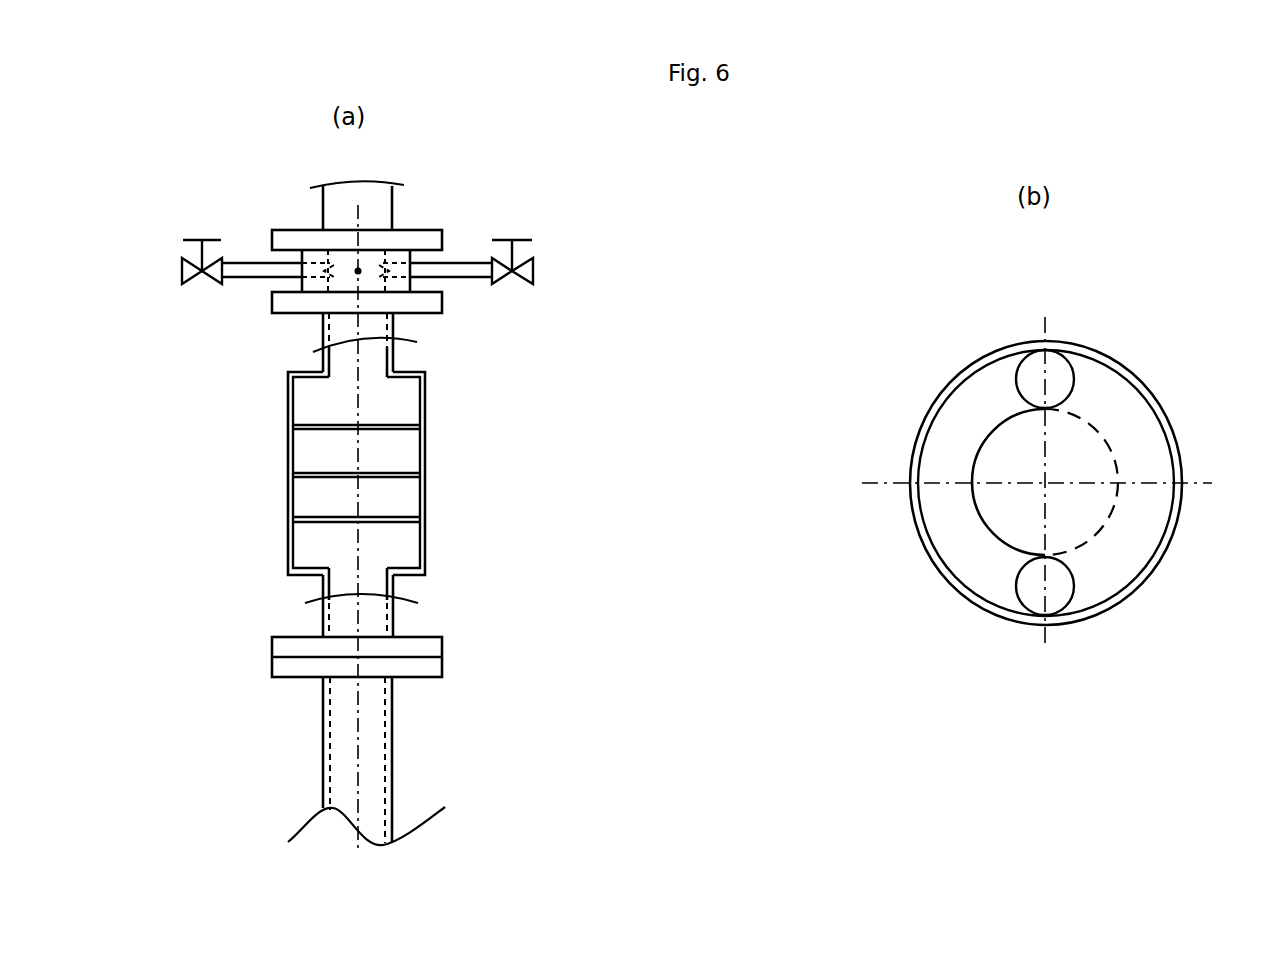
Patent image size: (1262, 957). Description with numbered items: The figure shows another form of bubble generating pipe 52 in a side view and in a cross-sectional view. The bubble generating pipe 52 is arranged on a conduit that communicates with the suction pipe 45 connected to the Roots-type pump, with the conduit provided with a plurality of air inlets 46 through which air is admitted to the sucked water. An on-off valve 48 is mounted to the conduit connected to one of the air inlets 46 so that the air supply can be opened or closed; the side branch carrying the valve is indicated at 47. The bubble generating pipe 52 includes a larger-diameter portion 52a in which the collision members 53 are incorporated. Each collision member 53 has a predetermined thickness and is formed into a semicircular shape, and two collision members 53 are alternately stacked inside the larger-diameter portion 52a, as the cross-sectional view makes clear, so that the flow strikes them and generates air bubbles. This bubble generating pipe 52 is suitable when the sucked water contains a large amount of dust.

The suction pipe 45 is at (383, 770).
The air inlet 46 is at (325, 268).
The branch pipe 47 is at (443, 268).
The on-off valve 48 is at (525, 237).
The bubble generating pipe 52 is at (288, 408).
The larger-diameter portion 52a is at (292, 503).
The collision member 53 is at (407, 498).